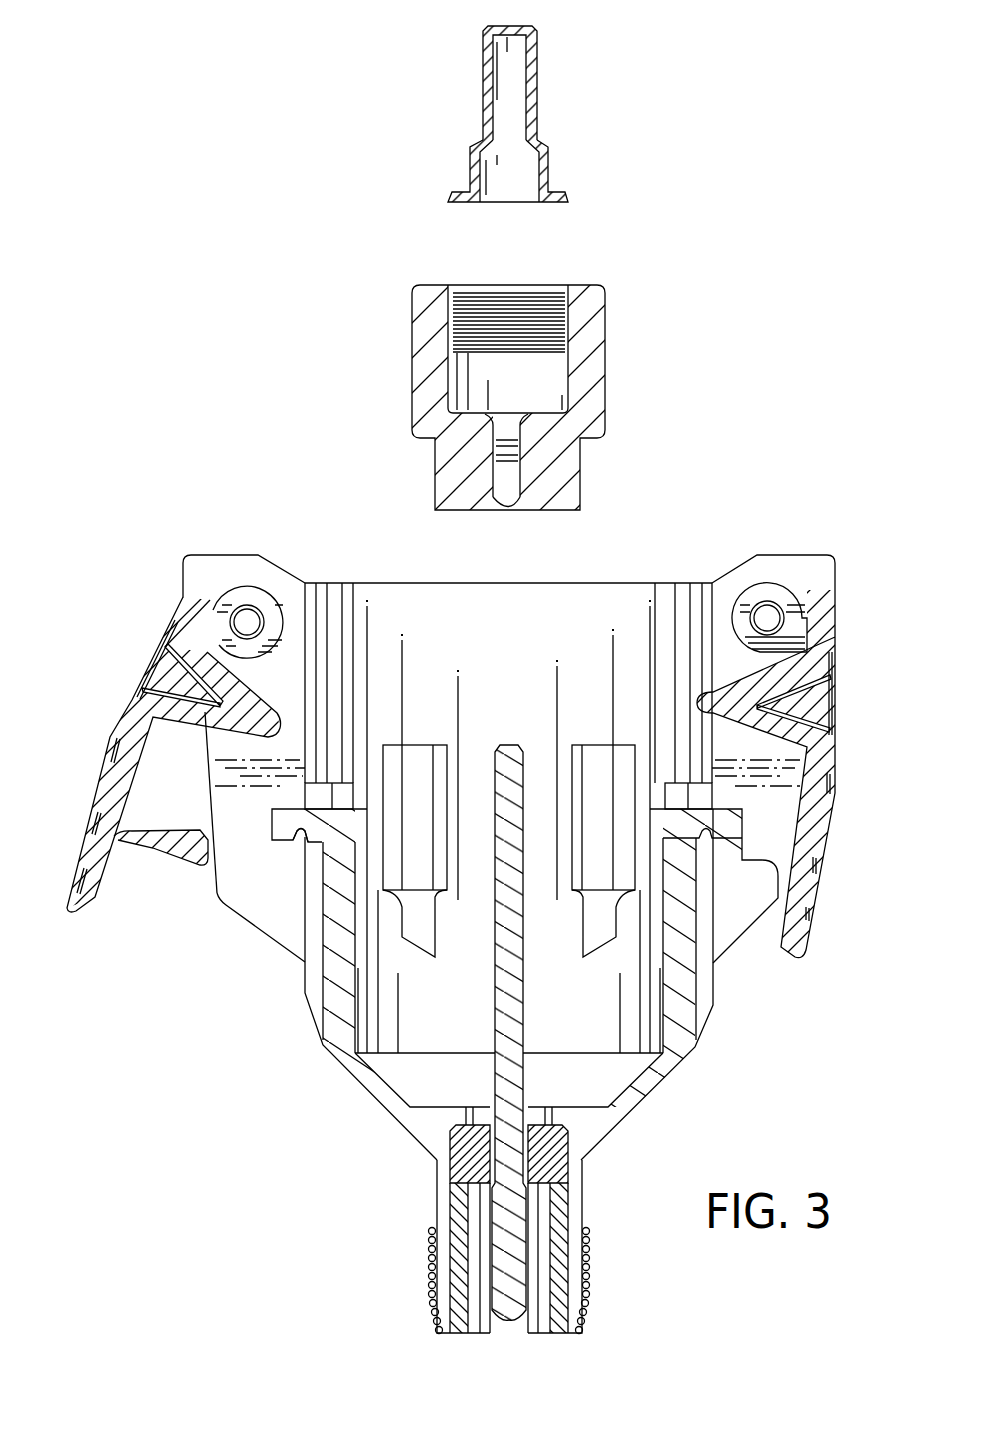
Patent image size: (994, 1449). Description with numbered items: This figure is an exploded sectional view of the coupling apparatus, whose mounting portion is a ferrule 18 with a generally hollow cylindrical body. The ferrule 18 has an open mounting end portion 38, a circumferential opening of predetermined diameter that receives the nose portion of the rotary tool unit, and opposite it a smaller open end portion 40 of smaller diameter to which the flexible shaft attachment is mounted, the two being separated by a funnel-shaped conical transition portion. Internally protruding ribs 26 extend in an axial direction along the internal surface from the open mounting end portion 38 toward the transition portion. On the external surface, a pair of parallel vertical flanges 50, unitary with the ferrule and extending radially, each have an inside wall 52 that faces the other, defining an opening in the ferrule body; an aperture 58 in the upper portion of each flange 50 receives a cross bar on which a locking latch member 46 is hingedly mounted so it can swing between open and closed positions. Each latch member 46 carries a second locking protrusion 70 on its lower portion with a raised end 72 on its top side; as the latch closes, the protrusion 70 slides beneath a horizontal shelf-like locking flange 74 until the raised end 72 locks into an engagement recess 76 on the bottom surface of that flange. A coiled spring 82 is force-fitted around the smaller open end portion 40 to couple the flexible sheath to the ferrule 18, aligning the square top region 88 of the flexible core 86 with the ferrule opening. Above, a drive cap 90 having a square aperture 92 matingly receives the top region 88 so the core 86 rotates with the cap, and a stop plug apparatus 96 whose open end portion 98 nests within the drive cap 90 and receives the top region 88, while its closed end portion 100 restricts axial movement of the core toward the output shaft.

The ferrule 18 is at (463, 912).
The internally protruding ribs 26 is at (615, 927).
The open mounting end portion 38 is at (463, 912).
The smaller open end portion 40 is at (582, 1198).
The locking latch member 46 is at (463, 772).
The vertical flange 50 is at (218, 555).
The inside wall 52 is at (243, 886).
The aperture 58 is at (765, 617).
The second locking protrusion 70 is at (155, 836).
The raised end 72 is at (190, 832).
The locking flange 74 is at (277, 812).
The engagement recess 76 is at (298, 834).
The coiled spring 82 is at (589, 1283).
The flexible core 86 is at (510, 1247).
The top region 88 is at (507, 780).
The drive cap 90 is at (547, 397).
The aperture 92 is at (508, 500).
The stop plug apparatus 96 is at (503, 102).
The open end portion 98 is at (468, 176).
The closed end portion 100 is at (483, 62).